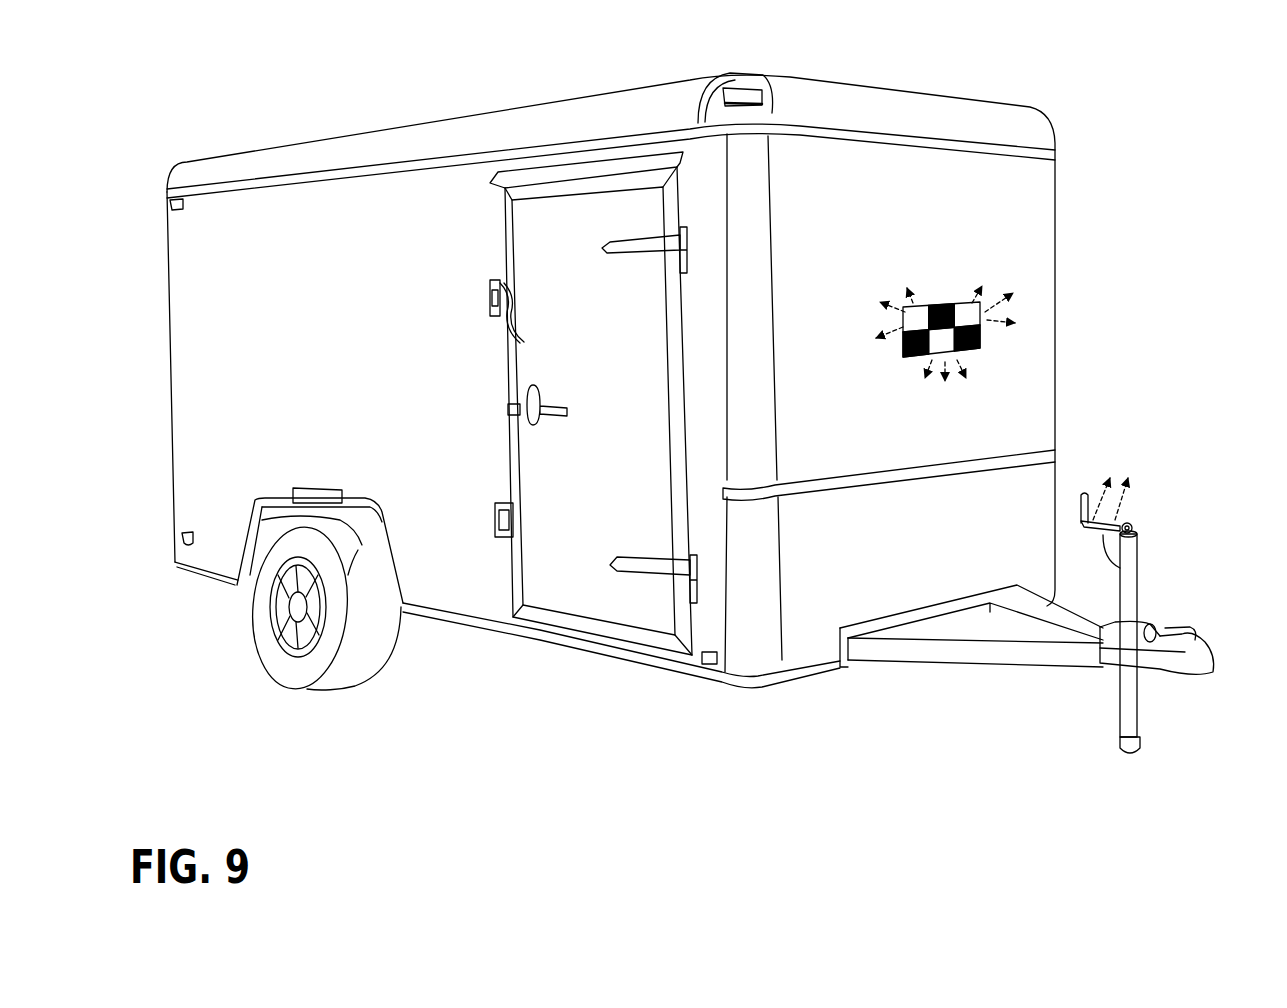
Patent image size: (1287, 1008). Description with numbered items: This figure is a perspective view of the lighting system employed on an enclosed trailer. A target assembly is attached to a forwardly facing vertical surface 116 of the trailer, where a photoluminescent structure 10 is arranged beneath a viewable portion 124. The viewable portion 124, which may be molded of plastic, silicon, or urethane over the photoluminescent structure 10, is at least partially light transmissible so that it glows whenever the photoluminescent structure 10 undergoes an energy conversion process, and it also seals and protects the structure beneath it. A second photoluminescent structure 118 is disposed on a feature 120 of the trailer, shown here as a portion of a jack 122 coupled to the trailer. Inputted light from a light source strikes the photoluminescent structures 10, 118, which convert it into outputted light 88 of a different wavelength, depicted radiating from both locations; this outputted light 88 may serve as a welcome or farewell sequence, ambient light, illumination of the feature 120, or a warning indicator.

The photoluminescent structure 10 is at (925, 303).
The outputted light 88 is at (893, 306).
The vertical surface 116 is at (1010, 185).
The second photoluminescent structure 118 is at (1122, 567).
The feature 120 is at (1078, 480).
The jack 122 is at (1126, 587).
The viewable portion 124 is at (944, 301).